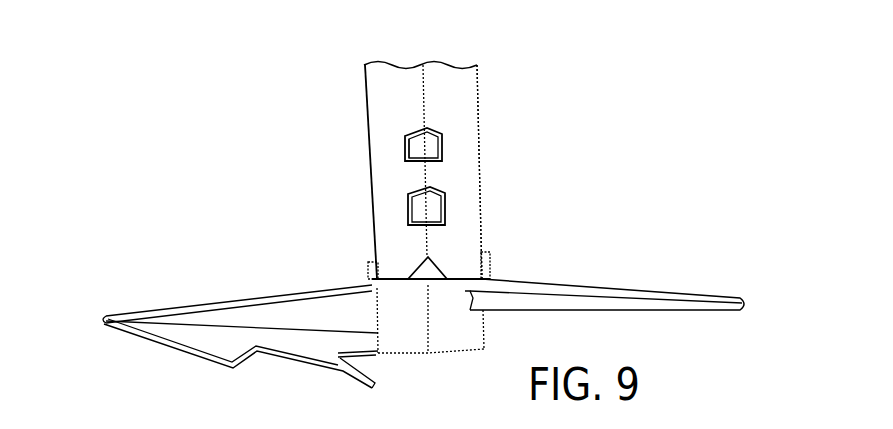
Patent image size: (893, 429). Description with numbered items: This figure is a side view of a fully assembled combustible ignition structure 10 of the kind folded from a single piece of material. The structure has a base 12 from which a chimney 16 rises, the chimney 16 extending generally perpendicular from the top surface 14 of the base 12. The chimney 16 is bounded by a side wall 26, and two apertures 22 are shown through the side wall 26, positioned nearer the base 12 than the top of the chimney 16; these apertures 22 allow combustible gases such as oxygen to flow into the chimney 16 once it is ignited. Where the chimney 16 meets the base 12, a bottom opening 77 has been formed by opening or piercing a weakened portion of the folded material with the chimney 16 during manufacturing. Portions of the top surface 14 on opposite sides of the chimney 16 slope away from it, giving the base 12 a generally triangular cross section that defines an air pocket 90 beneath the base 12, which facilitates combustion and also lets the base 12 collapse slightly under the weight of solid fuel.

The combustible ignition structure 10 is at (310, 179).
The base 12 is at (120, 369).
The top surface 14 is at (270, 293).
The chimney 16 is at (342, 109).
The apertures 22 is at (431, 208).
The side wall 26 is at (453, 100).
The bottom opening 77 is at (395, 281).
The air pocket 90 is at (650, 336).